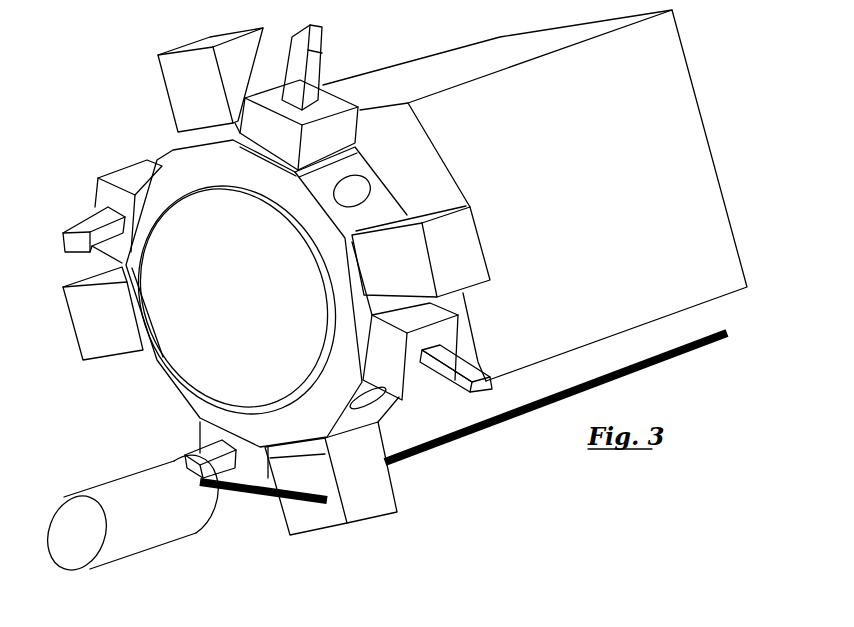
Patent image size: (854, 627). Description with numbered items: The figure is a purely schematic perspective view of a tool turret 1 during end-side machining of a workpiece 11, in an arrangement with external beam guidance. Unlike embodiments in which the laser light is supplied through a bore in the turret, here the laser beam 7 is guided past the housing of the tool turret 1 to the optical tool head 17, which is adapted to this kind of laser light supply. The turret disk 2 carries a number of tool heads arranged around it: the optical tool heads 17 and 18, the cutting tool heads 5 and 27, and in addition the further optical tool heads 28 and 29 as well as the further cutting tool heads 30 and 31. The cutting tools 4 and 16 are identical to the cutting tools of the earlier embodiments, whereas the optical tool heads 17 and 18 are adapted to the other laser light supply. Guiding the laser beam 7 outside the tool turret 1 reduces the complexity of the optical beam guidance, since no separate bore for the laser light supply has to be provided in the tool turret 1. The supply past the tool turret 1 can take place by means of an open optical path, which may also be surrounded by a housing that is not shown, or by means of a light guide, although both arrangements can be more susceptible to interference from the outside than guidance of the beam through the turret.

The tool turret 1 is at (145, 135).
The turret disk 2 is at (167, 357).
The cutting tool 4 is at (200, 448).
The cutting tool head 5 is at (207, 437).
The laser beam 7 is at (667, 365).
The workpiece 11 is at (153, 530).
The cutting tool 16 is at (313, 72).
The optical tool head 17 is at (378, 503).
The optical tool head 18 is at (182, 88).
The cutting tool head 27 is at (327, 102).
The optical tool head 28 is at (93, 330).
The optical tool head 29 is at (465, 250).
The cutting tool head 30 is at (412, 378).
The cutting tool head 31 is at (124, 181).